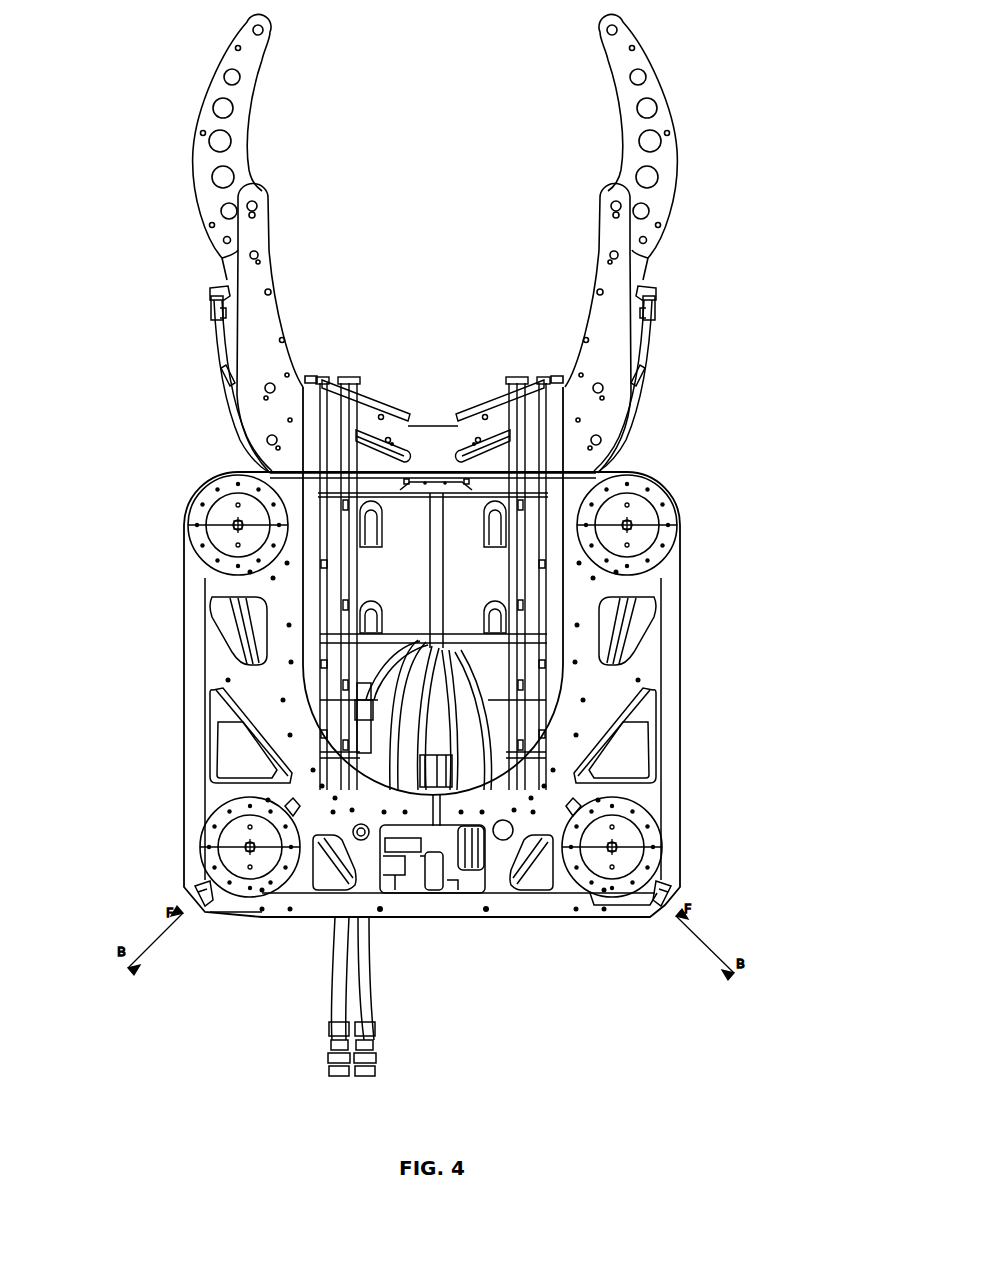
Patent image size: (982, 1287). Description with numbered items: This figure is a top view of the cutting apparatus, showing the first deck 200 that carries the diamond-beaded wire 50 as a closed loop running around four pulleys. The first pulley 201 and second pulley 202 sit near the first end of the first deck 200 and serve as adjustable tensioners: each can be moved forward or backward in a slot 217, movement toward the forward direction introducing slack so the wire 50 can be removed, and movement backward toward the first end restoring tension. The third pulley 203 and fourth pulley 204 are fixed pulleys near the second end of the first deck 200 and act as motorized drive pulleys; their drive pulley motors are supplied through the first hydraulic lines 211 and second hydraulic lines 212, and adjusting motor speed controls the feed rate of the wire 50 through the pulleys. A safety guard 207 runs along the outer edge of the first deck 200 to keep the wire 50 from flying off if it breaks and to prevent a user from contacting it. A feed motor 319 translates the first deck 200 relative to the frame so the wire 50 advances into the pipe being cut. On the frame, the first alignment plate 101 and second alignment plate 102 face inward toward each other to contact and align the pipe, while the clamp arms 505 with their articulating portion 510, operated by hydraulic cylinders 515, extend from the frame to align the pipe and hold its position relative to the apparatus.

The wire 50 is at (428, 473).
The first alignment plate 101 is at (495, 397).
The second alignment plate 102 is at (372, 397).
The first deck 200 is at (714, 572).
The first pulley 201 is at (665, 853).
The second pulley 202 is at (200, 858).
The third pulley 203 is at (208, 486).
The fourth pulley 204 is at (672, 493).
The safety guard 207 is at (183, 652).
The first hydraulic lines 211 is at (220, 356).
The second hydraulic lines 212 is at (647, 376).
The slot 217 is at (288, 805).
The feed motor 319 is at (402, 893).
The clamp arms 505 is at (270, 276).
The articulating portion 510 is at (222, 62).
The hydraulic cylinders 515 is at (222, 284).